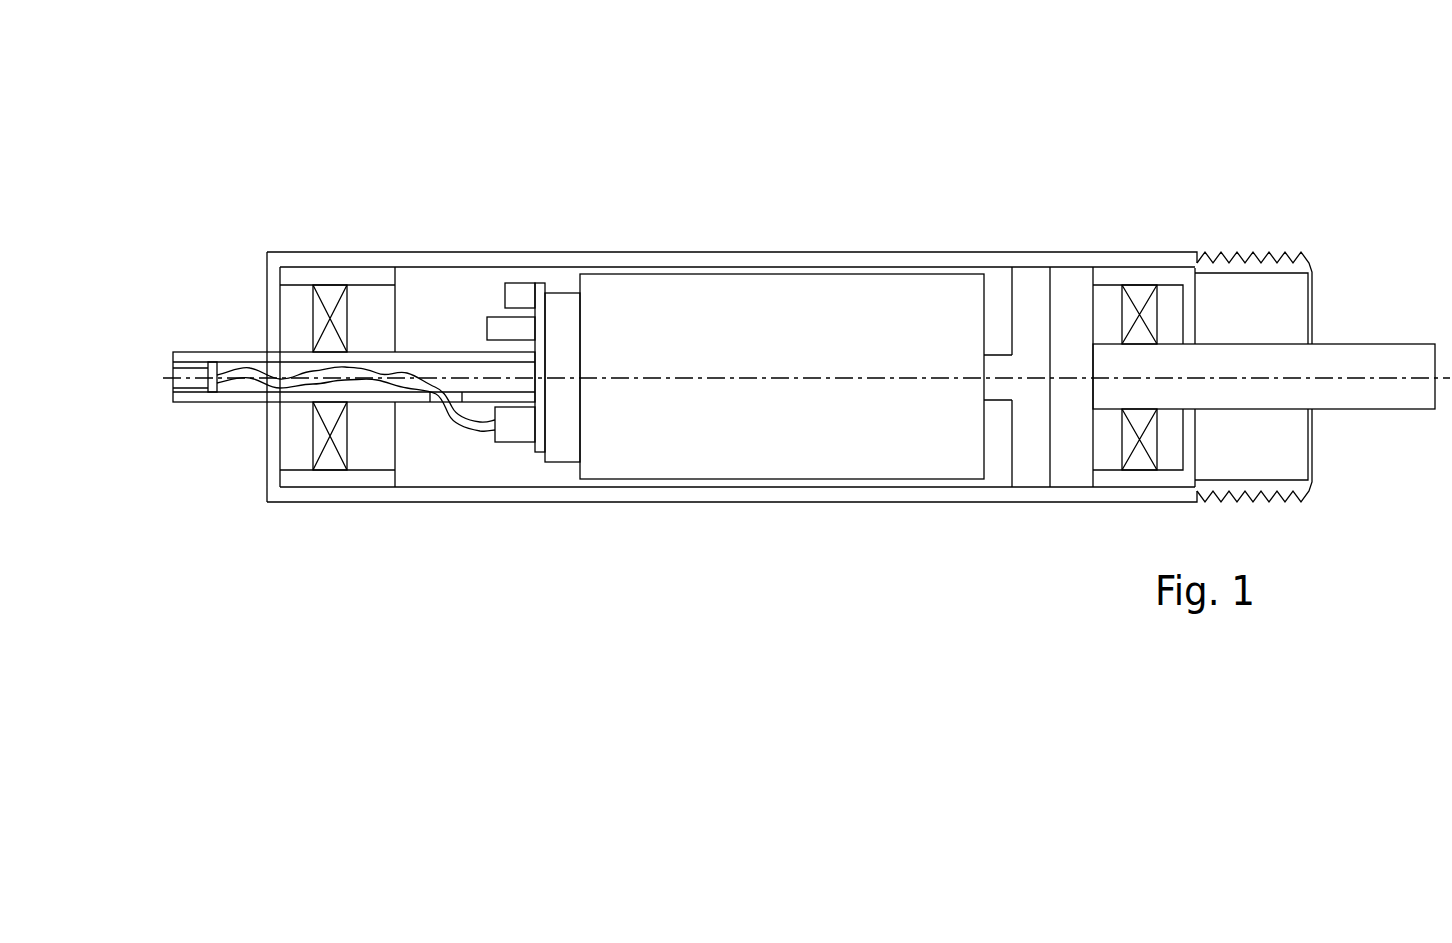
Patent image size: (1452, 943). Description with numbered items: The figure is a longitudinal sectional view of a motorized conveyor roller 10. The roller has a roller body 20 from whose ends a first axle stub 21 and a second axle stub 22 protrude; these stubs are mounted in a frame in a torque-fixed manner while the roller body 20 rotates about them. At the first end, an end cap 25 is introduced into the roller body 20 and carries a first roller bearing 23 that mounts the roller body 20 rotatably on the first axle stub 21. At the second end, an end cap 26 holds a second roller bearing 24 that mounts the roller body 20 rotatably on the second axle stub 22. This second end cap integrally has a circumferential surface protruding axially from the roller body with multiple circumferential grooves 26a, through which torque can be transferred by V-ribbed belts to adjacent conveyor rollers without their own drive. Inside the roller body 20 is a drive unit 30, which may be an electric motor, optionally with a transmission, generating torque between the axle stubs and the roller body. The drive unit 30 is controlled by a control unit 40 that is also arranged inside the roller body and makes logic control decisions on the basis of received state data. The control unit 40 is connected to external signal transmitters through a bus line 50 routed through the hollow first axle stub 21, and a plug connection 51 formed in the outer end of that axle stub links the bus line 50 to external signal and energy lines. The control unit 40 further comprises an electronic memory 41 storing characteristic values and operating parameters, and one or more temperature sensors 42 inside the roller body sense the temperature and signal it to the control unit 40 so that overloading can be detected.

The motorized conveyor roller 10 is at (974, 145).
The roller body 20 is at (598, 262).
The first axle stub 21 is at (238, 352).
The second axle stub 22 is at (1350, 358).
The first roller bearing 23 is at (328, 292).
The second roller bearing 24 is at (1137, 305).
The end cap 25 is at (302, 278).
The end cap 26 is at (1125, 277).
The circumferential grooves 26a is at (1249, 238).
The drive unit 30 is at (758, 313).
The control unit 40 is at (517, 422).
The electronic memory 41 is at (513, 298).
The temperature sensors 42 is at (495, 328).
The bus line 50 is at (352, 385).
The plug connection 51 is at (173, 373).